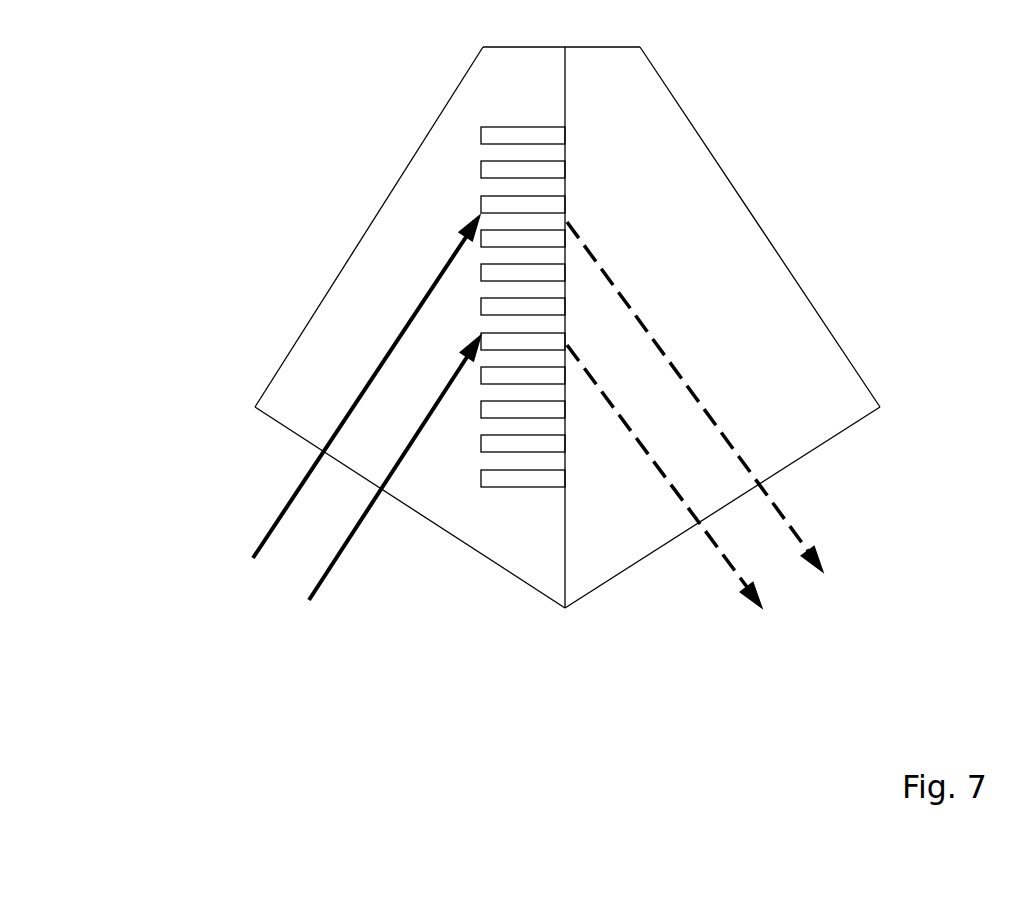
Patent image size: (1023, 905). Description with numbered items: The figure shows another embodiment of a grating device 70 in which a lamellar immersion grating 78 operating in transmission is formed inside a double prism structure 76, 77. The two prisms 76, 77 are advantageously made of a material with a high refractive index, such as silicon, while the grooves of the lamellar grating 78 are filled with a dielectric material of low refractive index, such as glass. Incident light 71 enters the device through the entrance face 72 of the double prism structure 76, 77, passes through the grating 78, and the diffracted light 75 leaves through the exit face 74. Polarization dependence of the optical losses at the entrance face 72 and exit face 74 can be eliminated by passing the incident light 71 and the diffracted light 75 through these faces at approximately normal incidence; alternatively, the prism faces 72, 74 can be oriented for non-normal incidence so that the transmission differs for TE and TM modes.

The grating device 70 is at (525, 651).
The incident light 71 is at (330, 570).
The entrance face 72 is at (277, 423).
The exit face 74 is at (820, 445).
The diffracted light 75 is at (817, 553).
The first prism of the double prism structure 76 is at (430, 193).
The second prism of the double prism structure 77 is at (683, 167).
The lamellar immersion grating 78 is at (520, 130).